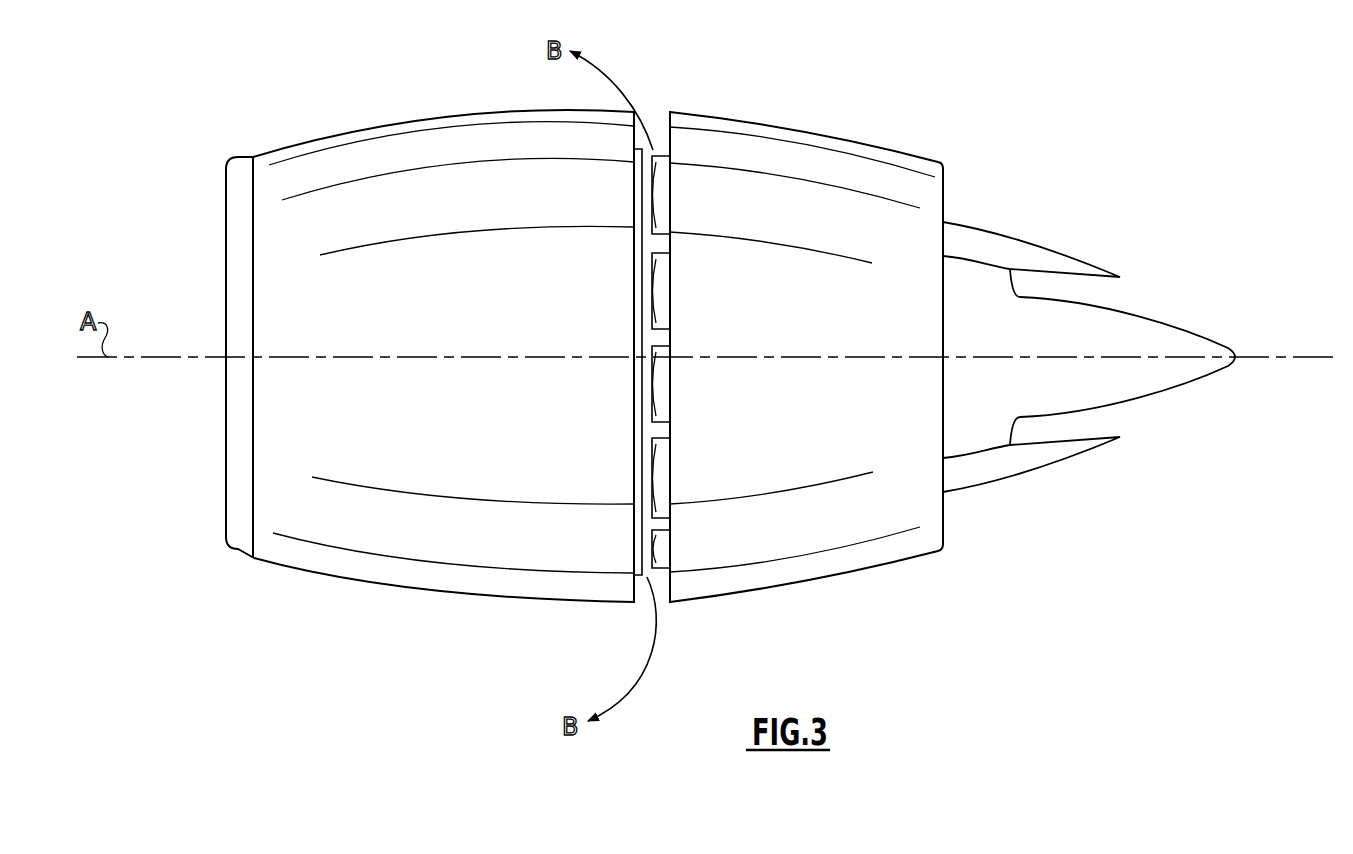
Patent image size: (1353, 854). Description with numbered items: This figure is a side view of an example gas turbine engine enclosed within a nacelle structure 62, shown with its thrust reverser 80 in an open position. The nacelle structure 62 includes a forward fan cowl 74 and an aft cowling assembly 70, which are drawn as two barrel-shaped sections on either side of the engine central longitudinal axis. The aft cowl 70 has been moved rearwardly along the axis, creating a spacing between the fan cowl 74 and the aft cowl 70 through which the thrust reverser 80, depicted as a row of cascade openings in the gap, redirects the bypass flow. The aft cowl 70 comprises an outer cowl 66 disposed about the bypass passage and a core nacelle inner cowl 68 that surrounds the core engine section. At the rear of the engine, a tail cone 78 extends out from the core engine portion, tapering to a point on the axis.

The nacelle structure 62 is at (415, 594).
The outer cowl 66 is at (798, 157).
The core nacelle inner cowl 68 is at (1018, 253).
The aft cowling assembly 70 is at (1089, 295).
The fan cowling 74 is at (455, 150).
The tail cone 78 is at (1145, 335).
The thrust reverser 80 is at (661, 127).